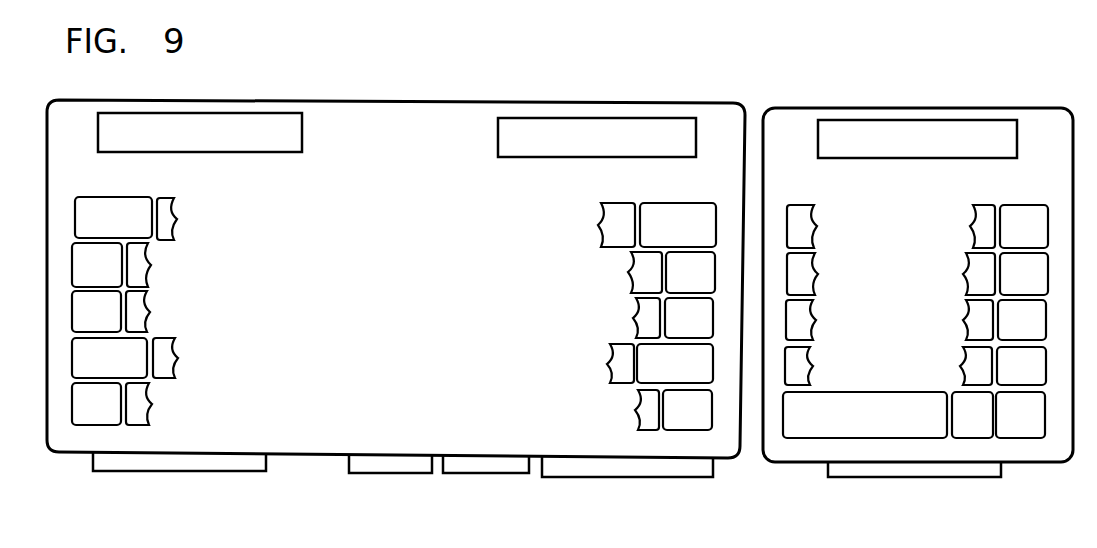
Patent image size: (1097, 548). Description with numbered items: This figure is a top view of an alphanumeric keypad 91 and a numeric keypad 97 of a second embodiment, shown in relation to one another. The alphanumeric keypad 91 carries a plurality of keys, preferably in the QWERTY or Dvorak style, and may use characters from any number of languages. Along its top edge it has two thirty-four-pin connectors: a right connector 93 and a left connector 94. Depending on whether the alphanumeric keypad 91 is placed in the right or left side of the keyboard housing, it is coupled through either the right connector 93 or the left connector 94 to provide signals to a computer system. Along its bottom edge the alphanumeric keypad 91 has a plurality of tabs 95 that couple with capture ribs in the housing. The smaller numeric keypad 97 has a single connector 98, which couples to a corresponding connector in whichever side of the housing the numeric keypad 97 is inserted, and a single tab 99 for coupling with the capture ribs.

The alphanumeric keypad 91 is at (401, 354).
The right connector 93 is at (681, 149).
The left connector 94 is at (286, 144).
The tabs 95 is at (632, 477).
The numeric keypad 97 is at (908, 359).
The connector 98 is at (1001, 152).
The tab 99 is at (905, 477).